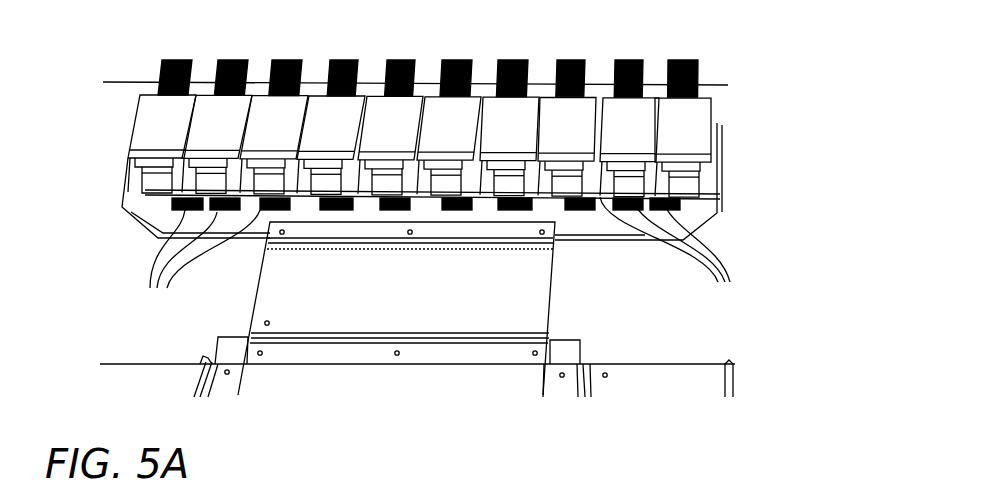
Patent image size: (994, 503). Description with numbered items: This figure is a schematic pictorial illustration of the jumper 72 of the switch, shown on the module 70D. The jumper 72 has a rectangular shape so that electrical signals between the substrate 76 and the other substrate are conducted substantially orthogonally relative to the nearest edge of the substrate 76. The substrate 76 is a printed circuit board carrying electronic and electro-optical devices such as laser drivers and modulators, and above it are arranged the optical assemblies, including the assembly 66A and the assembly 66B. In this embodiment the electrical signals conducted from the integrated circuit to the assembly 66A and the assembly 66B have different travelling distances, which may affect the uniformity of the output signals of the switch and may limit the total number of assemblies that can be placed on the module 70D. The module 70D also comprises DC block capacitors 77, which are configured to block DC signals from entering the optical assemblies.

The module 70D is at (775, 174).
The assembly 66A is at (413, 118).
The assembly 66B is at (140, 133).
The substrate 76 is at (122, 193).
The jumper 72 is at (545, 290).
The DC block capacitors 77 is at (443, 256).